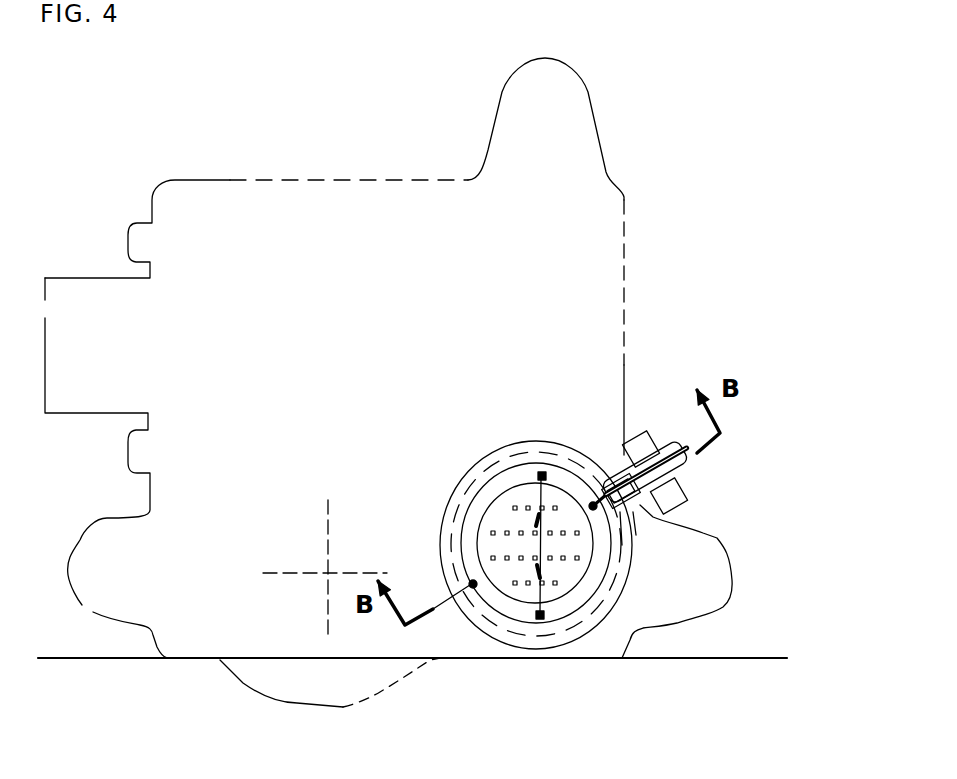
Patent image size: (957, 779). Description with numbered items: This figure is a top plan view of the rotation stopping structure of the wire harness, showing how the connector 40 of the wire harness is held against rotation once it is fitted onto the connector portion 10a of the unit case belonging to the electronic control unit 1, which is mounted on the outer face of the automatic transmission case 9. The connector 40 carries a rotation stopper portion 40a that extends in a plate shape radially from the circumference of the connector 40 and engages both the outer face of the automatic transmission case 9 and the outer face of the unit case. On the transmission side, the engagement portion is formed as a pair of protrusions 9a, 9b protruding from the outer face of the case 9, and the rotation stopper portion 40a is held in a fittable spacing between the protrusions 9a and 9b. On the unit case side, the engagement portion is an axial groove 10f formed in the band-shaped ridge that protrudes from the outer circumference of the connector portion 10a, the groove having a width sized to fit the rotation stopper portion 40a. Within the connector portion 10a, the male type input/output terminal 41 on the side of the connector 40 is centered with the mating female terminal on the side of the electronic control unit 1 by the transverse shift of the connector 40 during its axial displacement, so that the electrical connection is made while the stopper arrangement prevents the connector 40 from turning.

The electronic control unit 1 is at (372, 170).
The automatic transmission case 9 is at (678, 653).
The protrusion 9a is at (640, 433).
The protrusion 9b is at (678, 508).
The connector portion 10a is at (620, 550).
The axial groove 10f is at (612, 466).
The connector 40 is at (478, 473).
The rotation stopper portion 40a is at (677, 470).
The male type input/output terminal 41 is at (492, 533).